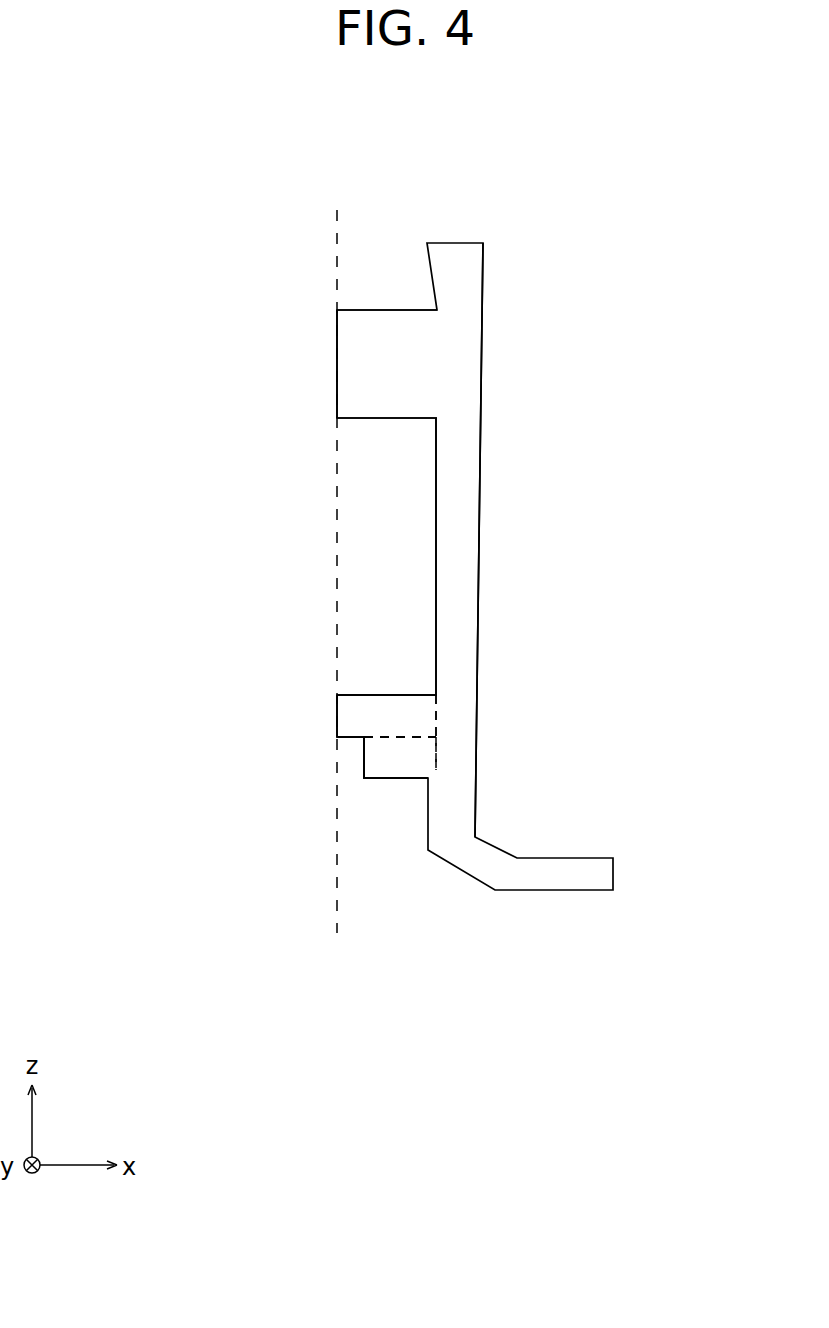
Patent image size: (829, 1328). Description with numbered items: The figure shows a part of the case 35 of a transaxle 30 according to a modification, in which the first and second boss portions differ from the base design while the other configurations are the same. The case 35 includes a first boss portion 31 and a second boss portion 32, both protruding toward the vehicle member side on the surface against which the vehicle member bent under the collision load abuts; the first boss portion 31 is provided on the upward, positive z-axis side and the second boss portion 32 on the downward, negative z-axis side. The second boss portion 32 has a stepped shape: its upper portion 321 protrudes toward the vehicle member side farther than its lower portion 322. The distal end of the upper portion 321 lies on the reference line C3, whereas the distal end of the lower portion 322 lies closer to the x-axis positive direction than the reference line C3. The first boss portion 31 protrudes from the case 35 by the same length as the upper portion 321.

The transaxle 30 is at (524, 216).
The first boss portion 31 is at (353, 368).
The second boss portion 32 is at (337, 735).
The upper portion of the second boss portion 321 is at (388, 713).
The lower portion of the second boss portion 322 is at (400, 757).
The case 35 is at (463, 467).
The reference line C3 is at (337, 243).